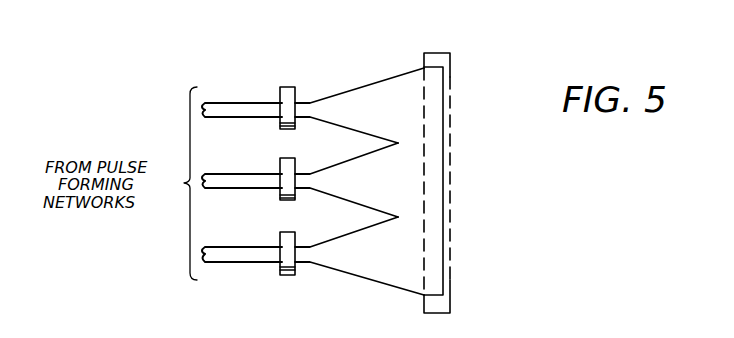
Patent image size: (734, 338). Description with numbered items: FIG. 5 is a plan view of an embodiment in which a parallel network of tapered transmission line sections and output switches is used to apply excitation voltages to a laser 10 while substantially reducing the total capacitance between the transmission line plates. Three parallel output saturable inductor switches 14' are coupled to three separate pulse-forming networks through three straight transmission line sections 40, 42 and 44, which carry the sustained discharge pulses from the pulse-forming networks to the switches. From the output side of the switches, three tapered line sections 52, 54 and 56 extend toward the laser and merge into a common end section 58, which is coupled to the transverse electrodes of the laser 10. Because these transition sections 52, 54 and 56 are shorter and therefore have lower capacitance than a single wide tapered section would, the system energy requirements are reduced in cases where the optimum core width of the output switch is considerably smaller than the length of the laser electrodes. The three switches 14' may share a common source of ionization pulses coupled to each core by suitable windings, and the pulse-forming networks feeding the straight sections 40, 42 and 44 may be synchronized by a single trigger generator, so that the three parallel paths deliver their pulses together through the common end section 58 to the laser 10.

The laser 10 is at (462, 160).
The output saturable inductor switches 14' is at (305, 160).
The straight transmission line section 40 is at (255, 103).
The straight transmission line section 42 is at (250, 174).
The straight transmission line section 44 is at (255, 247).
The tapered line section 52 is at (364, 84).
The tapered line section 54 is at (342, 170).
The tapered line section 56 is at (345, 234).
The common end section 58 is at (435, 130).